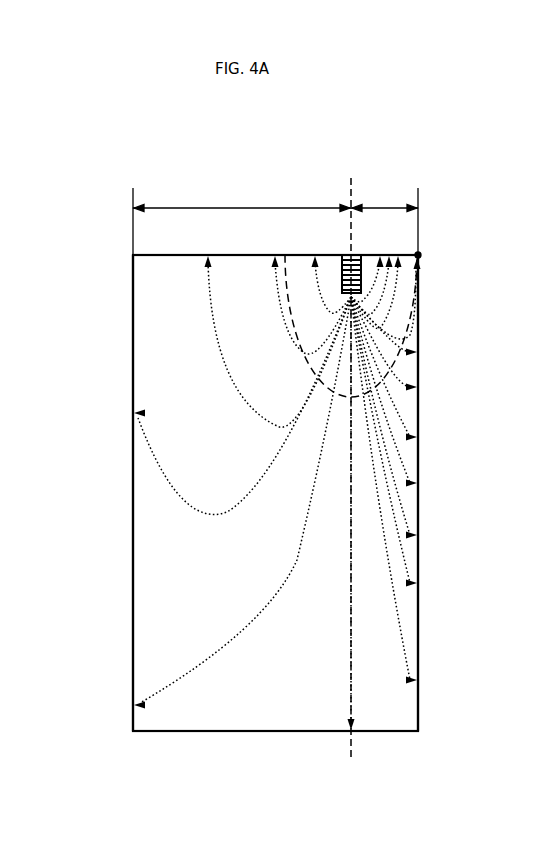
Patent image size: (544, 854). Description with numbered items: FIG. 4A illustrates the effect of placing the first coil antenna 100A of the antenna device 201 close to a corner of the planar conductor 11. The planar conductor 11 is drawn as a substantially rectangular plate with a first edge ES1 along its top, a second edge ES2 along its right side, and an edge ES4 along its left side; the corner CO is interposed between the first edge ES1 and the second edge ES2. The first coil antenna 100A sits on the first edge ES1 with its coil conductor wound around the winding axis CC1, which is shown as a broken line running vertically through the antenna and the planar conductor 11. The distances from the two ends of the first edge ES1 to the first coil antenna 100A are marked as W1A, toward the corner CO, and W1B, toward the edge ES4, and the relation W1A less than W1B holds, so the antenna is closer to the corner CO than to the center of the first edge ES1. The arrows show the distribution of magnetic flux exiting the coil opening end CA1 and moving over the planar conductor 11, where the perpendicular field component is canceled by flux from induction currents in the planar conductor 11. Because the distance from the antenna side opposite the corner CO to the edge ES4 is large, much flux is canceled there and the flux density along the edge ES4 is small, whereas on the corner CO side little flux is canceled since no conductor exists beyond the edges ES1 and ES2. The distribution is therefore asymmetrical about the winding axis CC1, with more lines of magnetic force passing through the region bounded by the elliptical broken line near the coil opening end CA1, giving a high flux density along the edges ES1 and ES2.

The antenna device 201 is at (151, 140).
The planar conductor 11 is at (148, 546).
The first coil antenna 100A is at (342, 254).
The first coil opening end CA1 is at (362, 250).
The corner CO is at (424, 250).
The first edge ES1 is at (124, 255).
The second edge ES2 is at (418, 742).
The edge ES4 is at (133, 742).
The winding axis CC1 is at (352, 449).
The distance W1A is at (384, 220).
The distance W1B is at (242, 220).